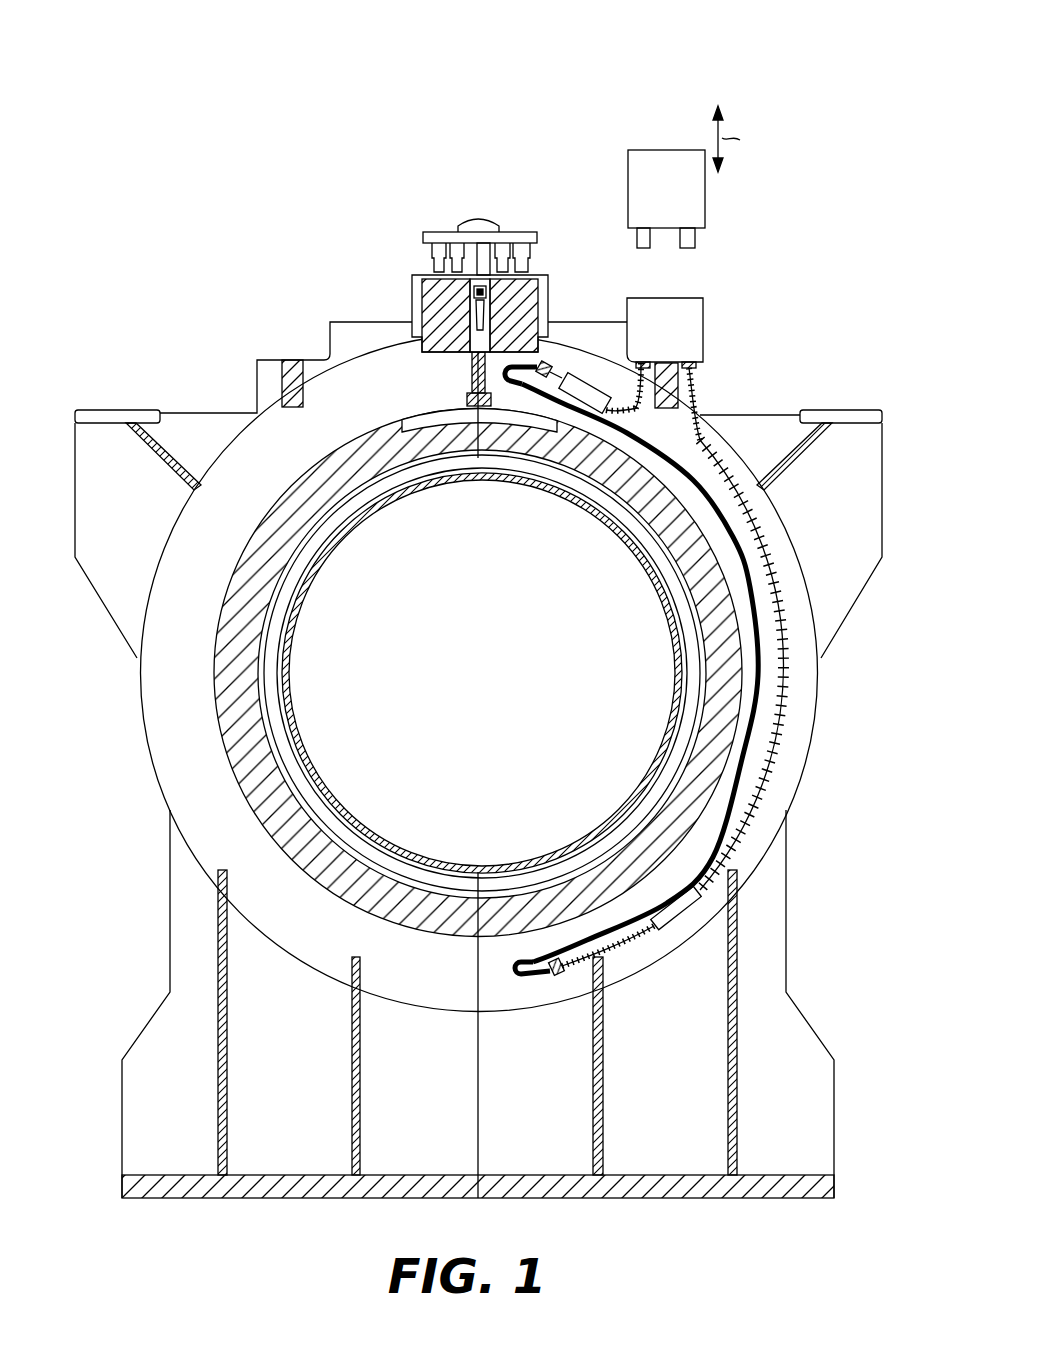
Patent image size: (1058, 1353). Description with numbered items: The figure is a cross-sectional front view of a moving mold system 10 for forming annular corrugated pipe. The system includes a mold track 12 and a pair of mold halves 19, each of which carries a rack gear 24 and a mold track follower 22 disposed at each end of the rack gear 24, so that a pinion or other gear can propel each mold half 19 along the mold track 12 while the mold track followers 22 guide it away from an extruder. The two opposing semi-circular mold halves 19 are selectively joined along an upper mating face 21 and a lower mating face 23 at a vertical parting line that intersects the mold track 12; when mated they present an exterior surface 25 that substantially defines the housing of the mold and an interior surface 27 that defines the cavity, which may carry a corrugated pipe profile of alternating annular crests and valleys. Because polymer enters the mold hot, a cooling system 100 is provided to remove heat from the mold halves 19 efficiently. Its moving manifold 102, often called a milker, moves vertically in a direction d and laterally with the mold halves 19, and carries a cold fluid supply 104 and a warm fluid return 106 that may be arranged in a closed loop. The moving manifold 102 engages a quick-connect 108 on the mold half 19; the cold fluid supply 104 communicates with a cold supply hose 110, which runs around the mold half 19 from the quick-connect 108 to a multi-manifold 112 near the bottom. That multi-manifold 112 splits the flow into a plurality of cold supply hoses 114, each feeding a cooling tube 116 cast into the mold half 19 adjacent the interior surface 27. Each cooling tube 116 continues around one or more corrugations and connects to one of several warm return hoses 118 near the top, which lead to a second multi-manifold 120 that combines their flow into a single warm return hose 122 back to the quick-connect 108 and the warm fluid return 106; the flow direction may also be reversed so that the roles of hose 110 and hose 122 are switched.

The moving mold system 10 is at (297, 191).
The mold track 12 is at (505, 232).
The mold half 19 is at (795, 765).
The upper mating face 21 is at (482, 452).
The mold track follower 22 is at (488, 242).
The lower mating face 23 is at (470, 908).
The rack gear 24 is at (540, 283).
The exterior surface 25 is at (143, 720).
The interior surface 27 is at (285, 665).
The cooling system 100 is at (710, 84).
The moving manifold 102 is at (693, 202).
The cold fluid supply 104 is at (695, 243).
The warm fluid return 106 is at (645, 250).
The quick-connect 108 is at (695, 318).
The cold supply hose 110 is at (793, 665).
The multi-manifold 112 is at (690, 898).
The cold supply hoses 114 is at (625, 940).
The cooling tube 116 is at (752, 526).
The warm return hoses 118 is at (562, 365).
The multi-manifold 120 is at (598, 325).
The warm return hose 122 is at (643, 408).